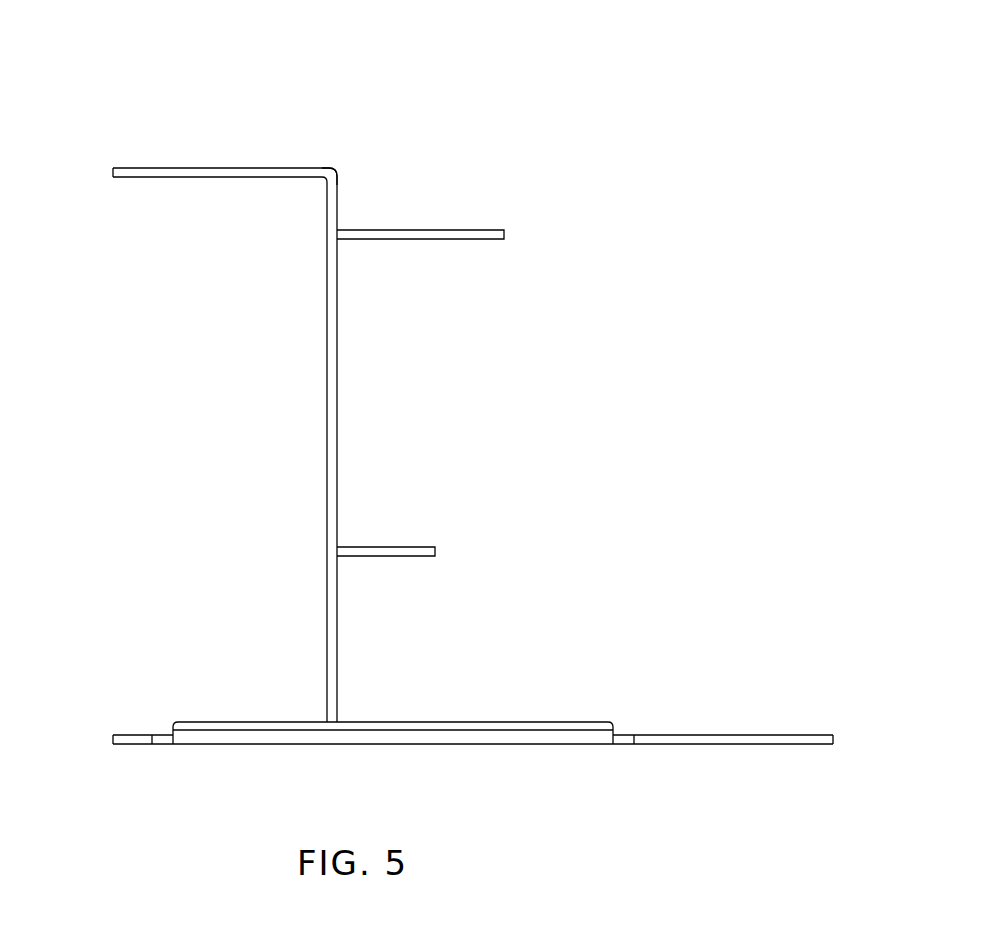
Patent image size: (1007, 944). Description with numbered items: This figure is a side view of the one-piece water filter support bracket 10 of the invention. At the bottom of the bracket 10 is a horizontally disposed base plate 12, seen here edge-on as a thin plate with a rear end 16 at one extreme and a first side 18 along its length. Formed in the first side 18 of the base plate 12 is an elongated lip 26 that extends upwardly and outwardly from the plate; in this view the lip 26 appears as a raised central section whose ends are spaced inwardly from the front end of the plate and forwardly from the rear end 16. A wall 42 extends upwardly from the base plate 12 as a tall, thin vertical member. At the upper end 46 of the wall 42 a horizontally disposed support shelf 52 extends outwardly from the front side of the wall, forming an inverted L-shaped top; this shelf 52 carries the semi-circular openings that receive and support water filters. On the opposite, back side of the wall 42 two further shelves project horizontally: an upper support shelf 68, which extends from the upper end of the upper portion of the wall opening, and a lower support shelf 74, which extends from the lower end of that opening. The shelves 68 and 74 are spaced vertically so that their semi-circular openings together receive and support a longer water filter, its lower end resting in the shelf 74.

The bracket 10 is at (469, 118).
The base plate 12 is at (487, 667).
The rear end 16 is at (110, 739).
The first side 18 is at (838, 740).
The elongated lip 26 is at (508, 722).
The wall 42 is at (327, 456).
The upper end 46 is at (335, 167).
The support shelf 52 is at (194, 166).
The support shelf 68 is at (489, 228).
The support shelf 74 is at (411, 547).